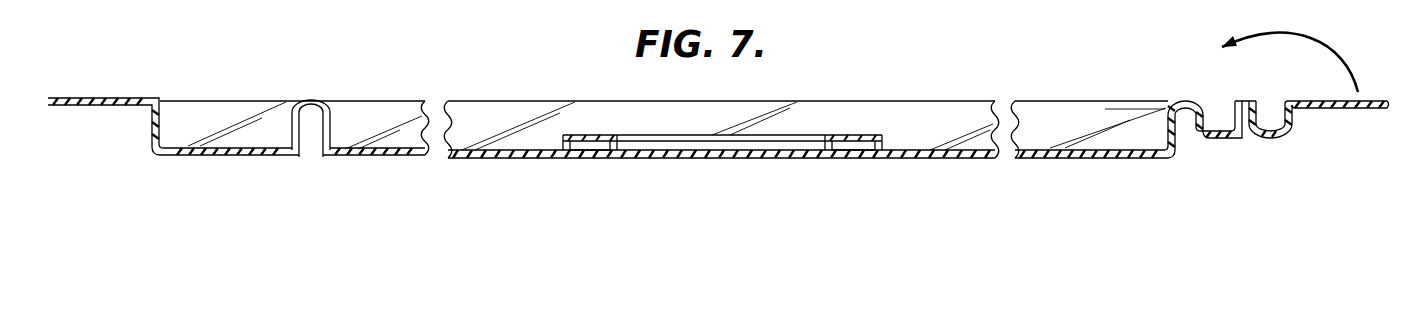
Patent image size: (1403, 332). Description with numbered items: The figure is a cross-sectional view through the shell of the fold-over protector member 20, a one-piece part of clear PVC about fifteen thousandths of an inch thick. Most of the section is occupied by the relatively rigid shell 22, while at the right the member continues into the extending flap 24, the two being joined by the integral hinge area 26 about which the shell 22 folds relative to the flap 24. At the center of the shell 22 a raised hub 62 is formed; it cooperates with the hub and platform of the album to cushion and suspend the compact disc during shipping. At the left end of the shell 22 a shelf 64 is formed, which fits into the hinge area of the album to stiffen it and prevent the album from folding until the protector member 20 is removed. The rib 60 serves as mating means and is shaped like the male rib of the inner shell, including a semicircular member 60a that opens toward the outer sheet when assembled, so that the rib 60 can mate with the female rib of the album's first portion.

The protector member 20 is at (567, 85).
The shell 22 is at (502, 158).
The flap 24 is at (1358, 110).
The hinge area 26 is at (1273, 138).
The rib 60 is at (345, 92).
The semicircular member 60a is at (305, 100).
The hub 62 is at (815, 135).
The shelf 64 is at (88, 97).